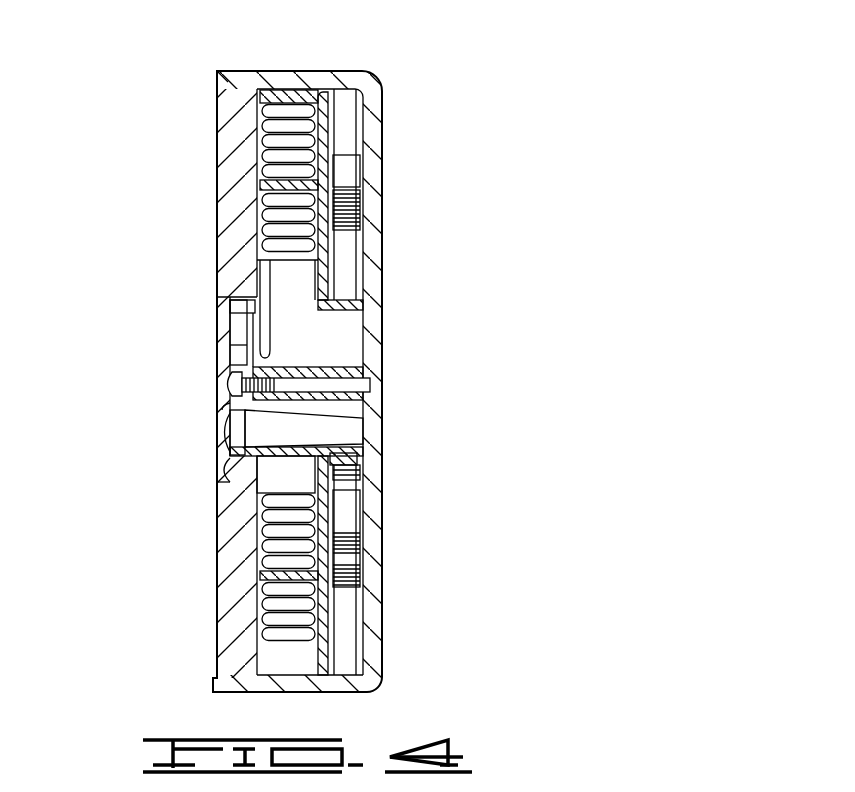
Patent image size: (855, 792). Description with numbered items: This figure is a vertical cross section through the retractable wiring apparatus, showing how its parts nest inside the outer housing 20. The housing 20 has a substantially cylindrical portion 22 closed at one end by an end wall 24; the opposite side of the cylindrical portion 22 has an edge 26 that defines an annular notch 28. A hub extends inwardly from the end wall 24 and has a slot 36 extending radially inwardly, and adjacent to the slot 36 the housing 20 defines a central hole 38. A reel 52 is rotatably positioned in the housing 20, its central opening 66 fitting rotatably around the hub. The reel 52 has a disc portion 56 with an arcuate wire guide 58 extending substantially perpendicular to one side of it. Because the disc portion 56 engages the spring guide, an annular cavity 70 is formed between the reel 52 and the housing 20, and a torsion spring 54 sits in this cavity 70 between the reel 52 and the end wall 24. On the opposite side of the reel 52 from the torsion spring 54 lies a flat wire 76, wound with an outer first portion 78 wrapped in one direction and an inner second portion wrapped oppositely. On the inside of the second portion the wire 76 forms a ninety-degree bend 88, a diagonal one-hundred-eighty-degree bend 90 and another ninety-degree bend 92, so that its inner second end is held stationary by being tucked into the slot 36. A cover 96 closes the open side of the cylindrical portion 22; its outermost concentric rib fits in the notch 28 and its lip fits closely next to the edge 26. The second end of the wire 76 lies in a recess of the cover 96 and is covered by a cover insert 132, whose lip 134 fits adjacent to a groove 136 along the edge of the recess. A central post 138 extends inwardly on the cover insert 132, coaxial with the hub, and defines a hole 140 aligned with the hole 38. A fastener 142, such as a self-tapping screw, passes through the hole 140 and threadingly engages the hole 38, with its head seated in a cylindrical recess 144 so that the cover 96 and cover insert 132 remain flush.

The outer housing 20 is at (297, 364).
The cylindrical portion 22 is at (227, 56).
The end wall 24 is at (376, 130).
The edge 26 is at (222, 73).
The annular notch 28 is at (228, 82).
The slot 36 is at (330, 340).
The central hole 38 is at (279, 368).
The reel 52 is at (300, 668).
The torsion spring 54 is at (356, 540).
The disc portion 56 is at (318, 660).
The wire guide 58 is at (275, 185).
The central opening 66 is at (283, 452).
The annular cavity 70 is at (402, 570).
The wire 76 is at (250, 600).
The outer first portion 78 is at (220, 570).
The 90° bend 88 is at (275, 535).
The diagonal 180° bend 90 is at (282, 315).
The 90° bend 92 is at (325, 313).
The cover 96 is at (212, 568).
The cover insert 132 is at (143, 319).
The lip 134 is at (220, 462).
The groove 136 is at (222, 297).
The central post 138 is at (222, 440).
The hole 140 is at (225, 405).
The fastener 142 is at (222, 368).
The cylindrical recess 144 is at (226, 380).